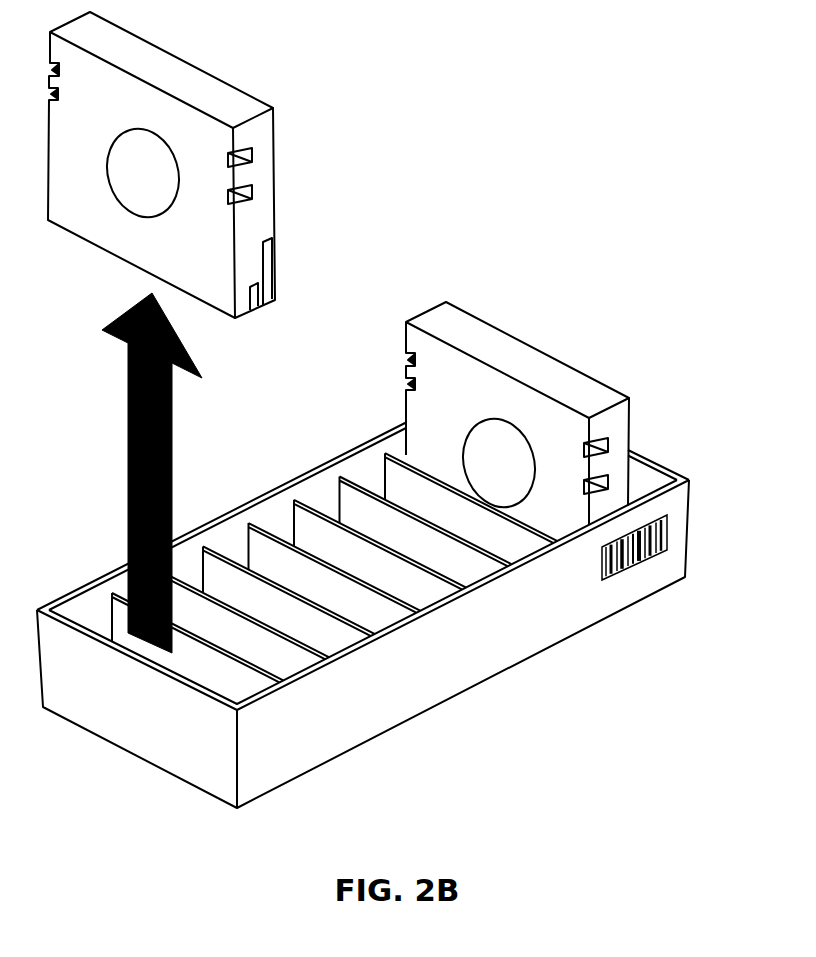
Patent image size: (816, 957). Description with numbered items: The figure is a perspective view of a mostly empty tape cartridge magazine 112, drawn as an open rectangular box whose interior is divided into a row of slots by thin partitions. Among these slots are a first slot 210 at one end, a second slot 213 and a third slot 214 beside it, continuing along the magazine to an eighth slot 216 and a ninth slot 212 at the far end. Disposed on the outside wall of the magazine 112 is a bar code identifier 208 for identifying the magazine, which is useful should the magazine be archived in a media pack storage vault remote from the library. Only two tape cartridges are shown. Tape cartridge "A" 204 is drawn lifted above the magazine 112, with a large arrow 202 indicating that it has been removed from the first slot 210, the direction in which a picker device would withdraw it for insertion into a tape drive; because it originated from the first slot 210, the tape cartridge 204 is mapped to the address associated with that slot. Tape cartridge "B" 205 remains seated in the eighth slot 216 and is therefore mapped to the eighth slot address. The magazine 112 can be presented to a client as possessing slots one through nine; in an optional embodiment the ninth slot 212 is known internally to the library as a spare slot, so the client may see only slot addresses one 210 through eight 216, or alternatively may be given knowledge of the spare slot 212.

The tape cartridge magazine 112 is at (512, 667).
The arrow 202 is at (128, 445).
The tape cartridge "A" 204 is at (276, 220).
The tape cartridge "B" 205 is at (412, 318).
The bar code identifier 208 is at (627, 570).
The first slot 210 is at (92, 598).
The ninth slot 212 is at (641, 476).
The second slot 213 is at (290, 650).
The third slot 214 is at (217, 570).
The eighth slot 216 is at (413, 433).